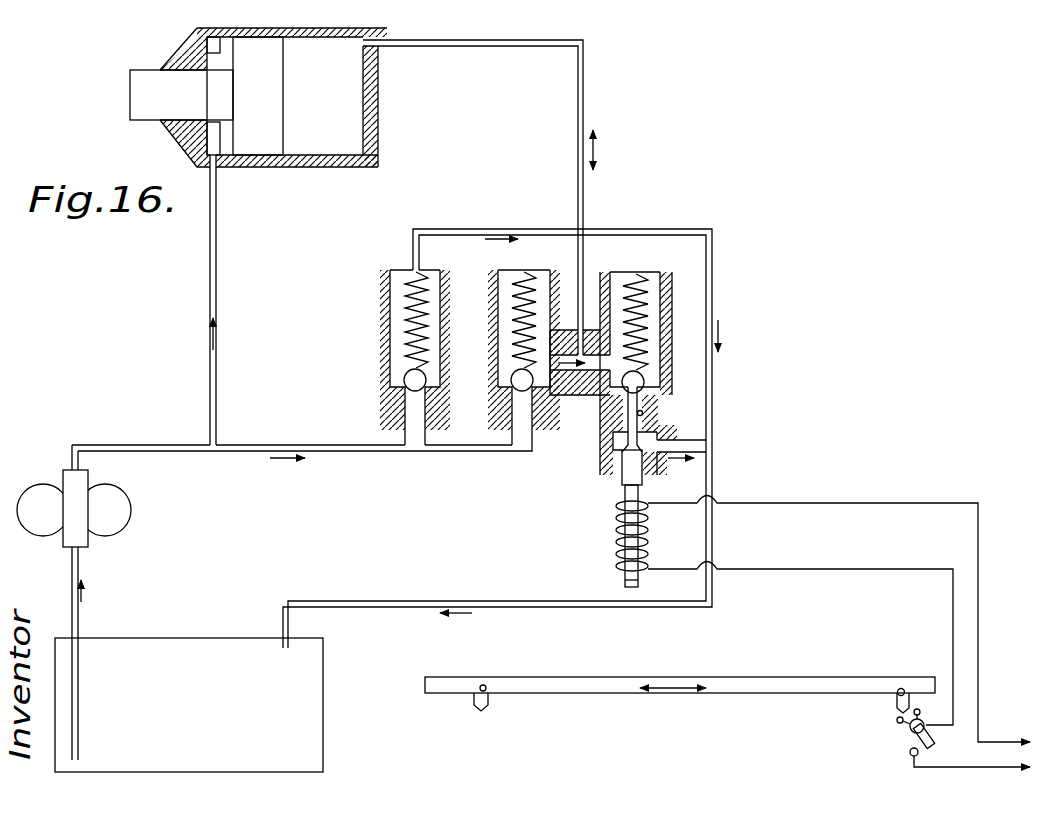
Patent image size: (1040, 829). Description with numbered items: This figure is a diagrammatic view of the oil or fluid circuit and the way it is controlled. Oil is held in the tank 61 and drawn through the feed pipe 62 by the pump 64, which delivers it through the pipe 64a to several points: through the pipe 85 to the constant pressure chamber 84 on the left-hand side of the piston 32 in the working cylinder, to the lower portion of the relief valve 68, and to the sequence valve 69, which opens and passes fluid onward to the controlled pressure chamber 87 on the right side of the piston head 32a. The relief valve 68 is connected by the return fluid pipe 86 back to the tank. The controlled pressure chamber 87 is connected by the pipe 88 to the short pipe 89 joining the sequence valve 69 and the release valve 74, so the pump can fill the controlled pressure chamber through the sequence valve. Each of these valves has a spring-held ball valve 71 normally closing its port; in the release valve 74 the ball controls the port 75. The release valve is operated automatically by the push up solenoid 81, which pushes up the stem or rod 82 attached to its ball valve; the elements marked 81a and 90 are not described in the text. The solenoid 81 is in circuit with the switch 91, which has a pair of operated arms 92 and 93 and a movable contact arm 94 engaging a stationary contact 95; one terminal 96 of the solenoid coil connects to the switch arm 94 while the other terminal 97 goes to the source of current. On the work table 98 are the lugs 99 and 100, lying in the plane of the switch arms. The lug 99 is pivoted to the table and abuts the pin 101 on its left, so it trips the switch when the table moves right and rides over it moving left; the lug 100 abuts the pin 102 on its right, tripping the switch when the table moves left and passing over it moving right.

The piston 32 is at (143, 97).
The piston head 32a is at (272, 77).
The oil supply tank 61 is at (305, 689).
The feed pipe 62 is at (78, 564).
The pump 64 is at (118, 521).
The pump delivery pipe 64a is at (288, 441).
The relief valve 68 is at (398, 276).
The sequence valve 69 is at (533, 278).
The ball valve 71 is at (402, 386).
The release valve 74 is at (658, 272).
The port 75 is at (641, 413).
The push up solenoid 81 is at (616, 519).
The solenoid plunger end 81a is at (630, 573).
The stem or rod 82 is at (622, 450).
The constant pressure chamber 84 is at (215, 47).
The pipe 85 is at (210, 240).
The return fluid pipe 86 is at (462, 231).
The controlled pressure chamber 87 is at (345, 100).
The pipe 88 is at (585, 81).
The short pipe 89 is at (588, 360).
The release valve outlet passage 90 is at (690, 436).
The switch 91 is at (910, 728).
The operated arm 92 is at (920, 713).
The operated arm 93 is at (897, 720).
The movable contact arm 94 is at (921, 739).
The stationary contact 95 is at (911, 755).
The solenoid terminal 96 is at (890, 569).
The solenoid terminal 97 is at (985, 590).
The work table 98 is at (763, 690).
The lug 99 is at (912, 700).
The lug 100 is at (480, 703).
The pin 101 is at (898, 692).
The pin 102 is at (490, 688).